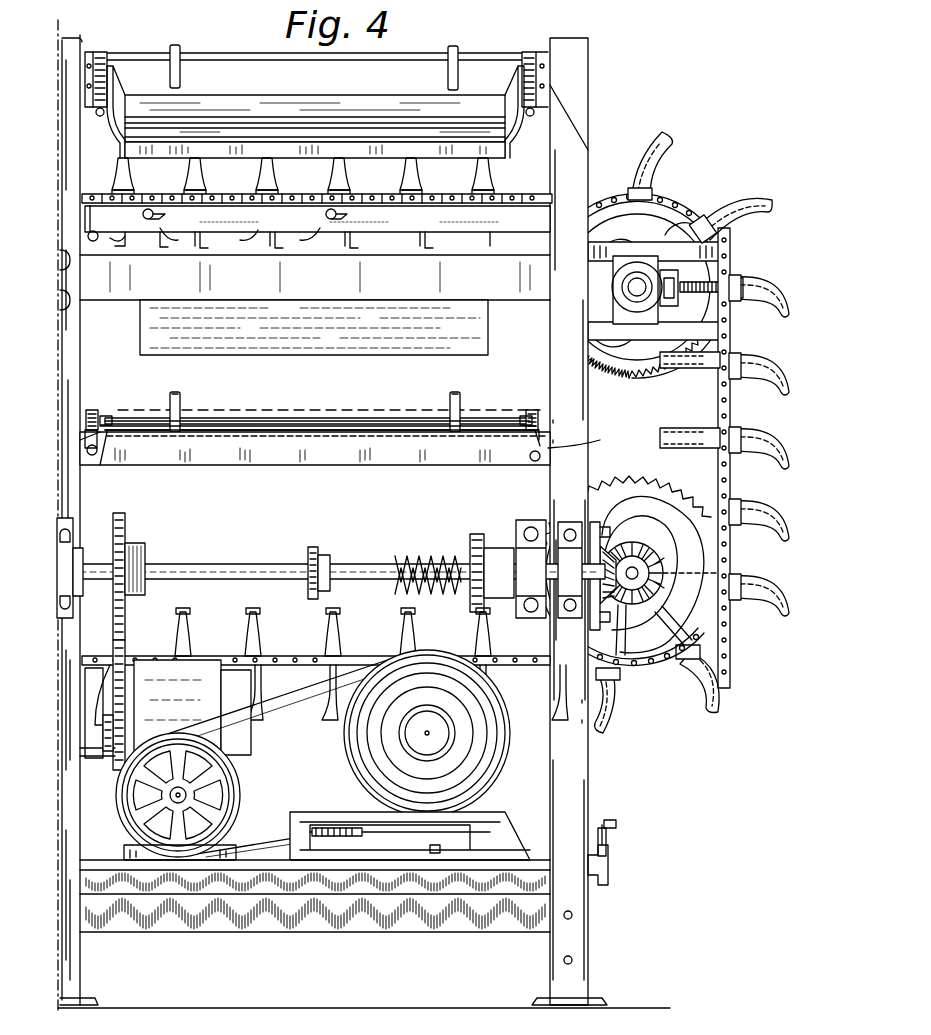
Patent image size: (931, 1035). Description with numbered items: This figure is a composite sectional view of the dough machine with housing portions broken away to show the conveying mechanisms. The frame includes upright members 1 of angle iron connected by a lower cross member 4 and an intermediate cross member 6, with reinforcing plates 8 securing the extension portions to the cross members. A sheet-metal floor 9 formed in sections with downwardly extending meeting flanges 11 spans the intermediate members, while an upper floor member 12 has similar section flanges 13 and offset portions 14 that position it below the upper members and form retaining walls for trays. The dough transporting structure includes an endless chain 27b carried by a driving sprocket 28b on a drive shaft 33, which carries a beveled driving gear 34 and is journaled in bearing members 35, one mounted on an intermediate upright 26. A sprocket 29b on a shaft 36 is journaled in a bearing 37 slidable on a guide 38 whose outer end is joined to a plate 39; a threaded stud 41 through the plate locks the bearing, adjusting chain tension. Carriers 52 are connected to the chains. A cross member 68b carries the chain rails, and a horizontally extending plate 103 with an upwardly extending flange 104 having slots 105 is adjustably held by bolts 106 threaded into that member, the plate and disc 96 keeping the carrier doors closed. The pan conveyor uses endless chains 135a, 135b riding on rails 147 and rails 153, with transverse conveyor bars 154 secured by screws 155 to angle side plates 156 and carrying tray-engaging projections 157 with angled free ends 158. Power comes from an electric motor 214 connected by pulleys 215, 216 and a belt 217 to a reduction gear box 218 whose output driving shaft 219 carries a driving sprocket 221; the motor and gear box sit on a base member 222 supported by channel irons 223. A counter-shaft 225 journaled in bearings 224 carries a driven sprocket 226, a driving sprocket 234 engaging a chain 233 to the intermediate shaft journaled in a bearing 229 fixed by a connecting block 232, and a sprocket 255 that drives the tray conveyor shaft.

The upright member 1 is at (588, 794).
The lower cross member 4 is at (262, 925).
The intermediate cross member 6 is at (278, 462).
The reinforcing plate 8 is at (86, 442).
The connecting wall or floor 9 is at (310, 486).
The meeting flange 11 is at (170, 448).
The floor member 12 is at (322, 132).
The flange 13 is at (238, 150).
The offset portion 14 is at (190, 108).
The intermediate upright 26 is at (738, 285).
The endless chain 27b is at (670, 680).
The driving sprocket 28b is at (668, 448).
The sprocket 29b is at (672, 370).
The drive shaft 33 is at (640, 580).
The beveled driving gear 34 is at (650, 566).
The bearing member 35 is at (598, 612).
The shaft 36 is at (641, 284).
The bearing 37 is at (642, 322).
The guide 38 is at (658, 250).
The plate 39 is at (731, 312).
The threaded stud 41 is at (705, 282).
The carrier 52 is at (742, 434).
The cross member 68b is at (400, 222).
The disc 96 is at (105, 240).
The horizontally extending plate 103 is at (258, 238).
The upwardly extending flange 104 is at (232, 222).
The horizontally extending slot 105 is at (150, 225).
The bolt 106 is at (340, 212).
The endless chain 135a is at (106, 50).
The endless chain 135b is at (530, 50).
The rail 147 is at (100, 442).
The rail 153 is at (102, 116).
The conveyor bar 154 is at (218, 52).
The screw 155 is at (112, 418).
The angle side plate 156 is at (106, 412).
The tray-engaging projection 157 is at (181, 420).
The angularly extending free end 158 is at (182, 398).
The electric motor 214 is at (360, 756).
The pulley 215 is at (375, 728).
The pulley 216 is at (228, 780).
The belt 217 is at (300, 825).
The reduction gear box 218 is at (200, 660).
The output driving shaft 219 is at (93, 750).
The driving sprocket 221 is at (105, 725).
The base member 222 is at (468, 862).
The channel iron 223 is at (395, 870).
The bearing 224 is at (58, 560).
The counter-shaft 225 is at (212, 568).
The driven sprocket 226 is at (134, 545).
The bearing 229 is at (522, 560).
The connecting member or block 232 is at (560, 612).
The chain 233 is at (475, 548).
The driving sprocket 234 is at (452, 590).
The sprocket 255 is at (318, 560).